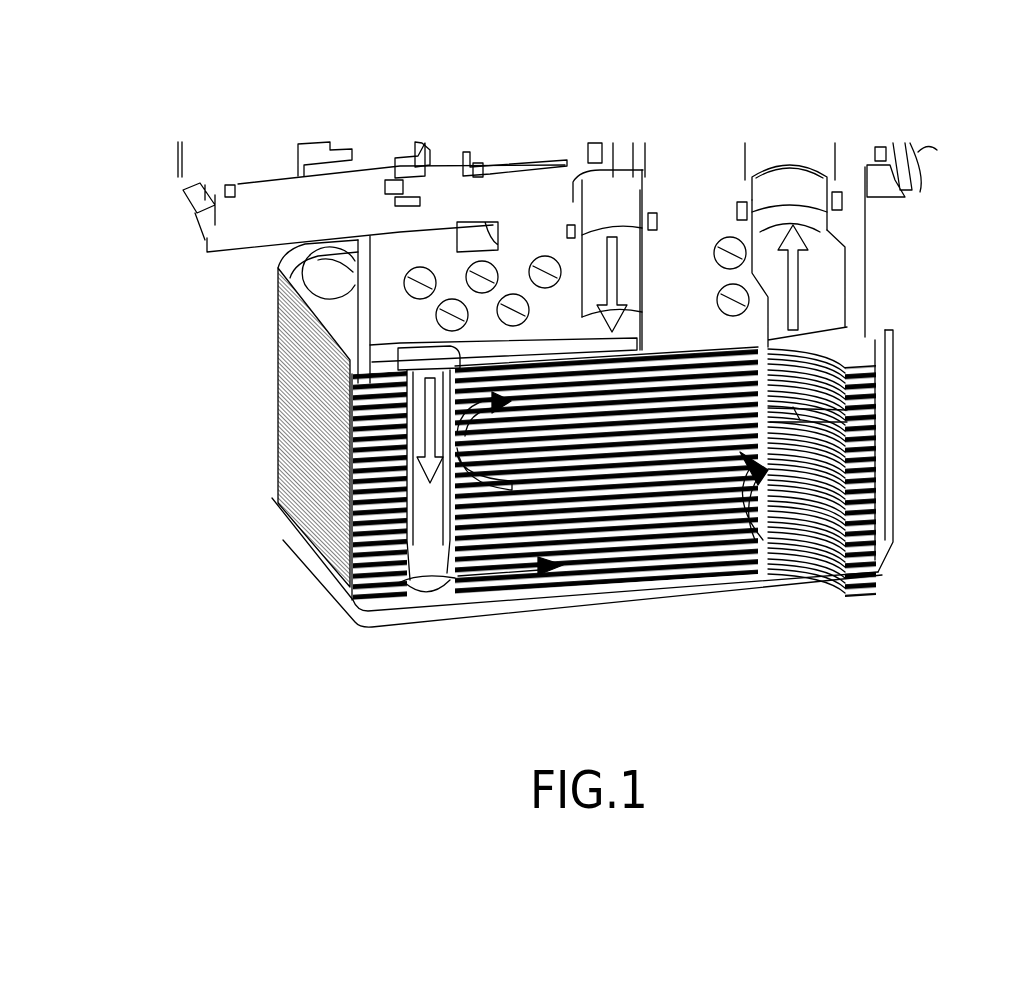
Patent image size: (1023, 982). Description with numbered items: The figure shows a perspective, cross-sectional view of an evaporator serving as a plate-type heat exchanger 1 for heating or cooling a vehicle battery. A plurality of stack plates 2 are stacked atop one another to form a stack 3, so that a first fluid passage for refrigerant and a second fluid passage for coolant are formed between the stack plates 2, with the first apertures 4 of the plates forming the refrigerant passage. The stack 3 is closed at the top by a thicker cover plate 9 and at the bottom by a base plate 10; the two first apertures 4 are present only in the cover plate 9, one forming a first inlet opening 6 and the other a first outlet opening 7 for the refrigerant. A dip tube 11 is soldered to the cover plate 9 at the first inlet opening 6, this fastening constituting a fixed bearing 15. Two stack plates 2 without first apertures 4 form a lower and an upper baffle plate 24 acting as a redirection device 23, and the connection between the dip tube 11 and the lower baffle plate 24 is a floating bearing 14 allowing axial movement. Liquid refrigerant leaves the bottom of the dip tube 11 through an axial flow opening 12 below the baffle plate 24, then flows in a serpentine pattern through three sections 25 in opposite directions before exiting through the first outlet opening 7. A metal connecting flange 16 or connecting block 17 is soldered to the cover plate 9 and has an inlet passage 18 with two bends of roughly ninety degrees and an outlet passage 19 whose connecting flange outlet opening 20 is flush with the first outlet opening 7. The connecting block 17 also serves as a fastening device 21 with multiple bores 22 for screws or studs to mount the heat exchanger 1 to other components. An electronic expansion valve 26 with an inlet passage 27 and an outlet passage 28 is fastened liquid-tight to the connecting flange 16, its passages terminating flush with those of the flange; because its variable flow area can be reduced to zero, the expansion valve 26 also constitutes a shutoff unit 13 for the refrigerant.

The heat exchanger 1 is at (240, 628).
The stack plates 2 is at (297, 341).
The stack 3 is at (232, 425).
The first apertures 4 is at (400, 605).
The first inlet opening 6 is at (430, 367).
The first outlet opening 7 is at (899, 435).
The cover plate 9 is at (340, 318).
The base plate 10 is at (708, 583).
The dip tube 11 is at (420, 535).
The flow opening 12 is at (428, 597).
The shutoff unit 13 is at (217, 233).
The floating bearing 14 is at (397, 537).
The fixed bearing 15 is at (397, 380).
The connecting flange 16 is at (463, 237).
The connecting block 17 is at (463, 237).
The inlet passage 18 is at (667, 280).
The outlet passage 19 is at (817, 275).
The connecting flange outlet opening 20 is at (807, 330).
The fastening device 21 is at (392, 297).
The bores 22 is at (507, 305).
The redirection device 23 is at (400, 522).
The baffle plate 24 is at (802, 402).
The sections 25 is at (703, 400).
The electronic expansion valve 26 is at (703, 173).
The inlet passage 27 is at (618, 202).
The outlet passage 28 is at (790, 178).